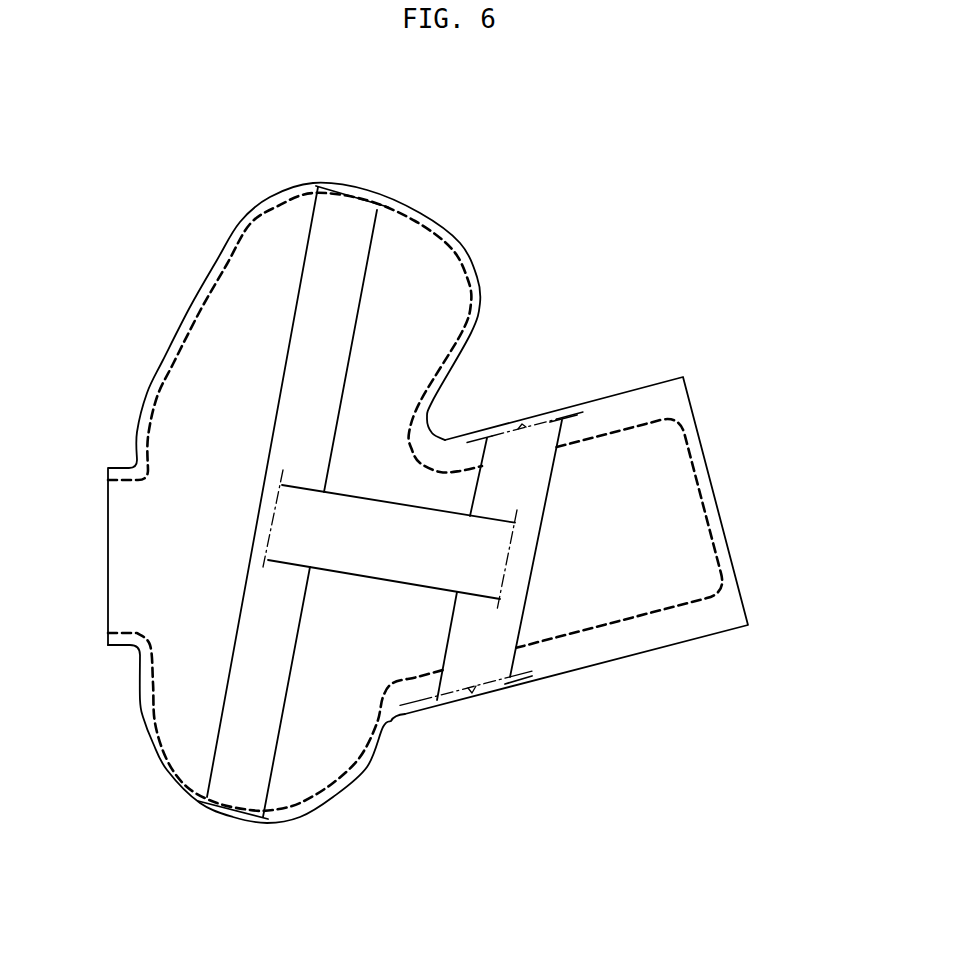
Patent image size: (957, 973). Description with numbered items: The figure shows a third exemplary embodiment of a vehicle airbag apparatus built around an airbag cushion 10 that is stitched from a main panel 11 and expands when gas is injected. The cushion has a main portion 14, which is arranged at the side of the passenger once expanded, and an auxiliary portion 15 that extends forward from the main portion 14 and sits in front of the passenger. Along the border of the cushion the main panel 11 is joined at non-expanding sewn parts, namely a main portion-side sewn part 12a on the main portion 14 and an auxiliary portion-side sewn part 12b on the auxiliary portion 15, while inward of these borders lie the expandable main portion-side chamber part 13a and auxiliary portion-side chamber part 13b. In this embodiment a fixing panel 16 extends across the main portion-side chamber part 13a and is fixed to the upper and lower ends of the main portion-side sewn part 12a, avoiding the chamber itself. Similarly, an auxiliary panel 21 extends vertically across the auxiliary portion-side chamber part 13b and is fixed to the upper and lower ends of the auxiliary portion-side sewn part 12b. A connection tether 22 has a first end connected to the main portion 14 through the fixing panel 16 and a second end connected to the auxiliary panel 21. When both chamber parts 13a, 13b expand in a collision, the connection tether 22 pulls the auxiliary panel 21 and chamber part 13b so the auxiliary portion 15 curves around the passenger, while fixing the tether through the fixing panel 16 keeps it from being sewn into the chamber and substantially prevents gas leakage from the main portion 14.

The airbag cushion 10 is at (373, 186).
The main panel 11 is at (443, 223).
The main portion-side sewn part 12a is at (296, 822).
The auxiliary portion-side sewn part 12b is at (622, 628).
The main portion-side chamber part 13a is at (283, 256).
The auxiliary portion-side chamber part 13b is at (637, 483).
The main portion 14 is at (232, 380).
The auxiliary portion 15 is at (629, 532).
The fixing panel 16 is at (240, 753).
The auxiliary panel 21 is at (487, 630).
The connection tether 22 is at (390, 549).